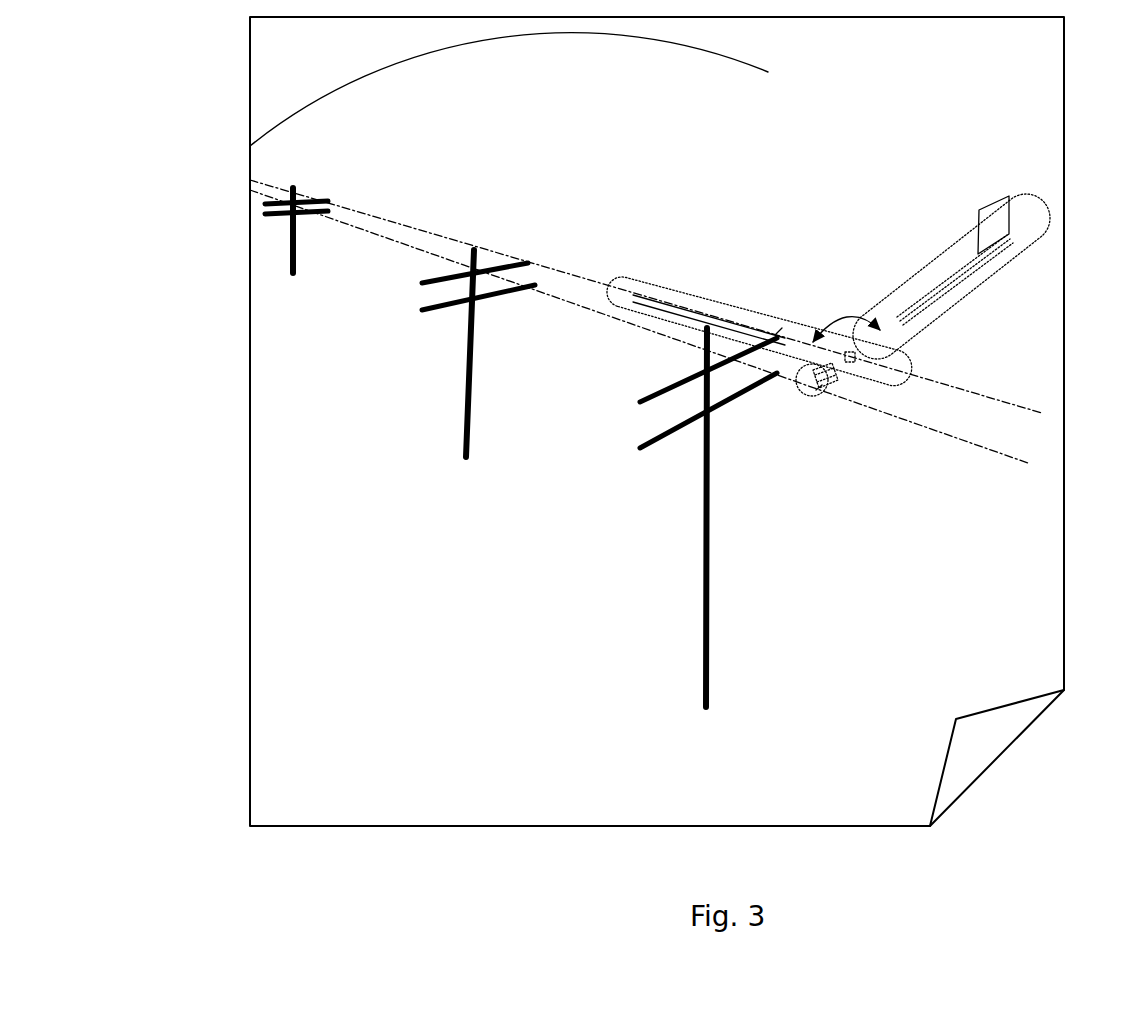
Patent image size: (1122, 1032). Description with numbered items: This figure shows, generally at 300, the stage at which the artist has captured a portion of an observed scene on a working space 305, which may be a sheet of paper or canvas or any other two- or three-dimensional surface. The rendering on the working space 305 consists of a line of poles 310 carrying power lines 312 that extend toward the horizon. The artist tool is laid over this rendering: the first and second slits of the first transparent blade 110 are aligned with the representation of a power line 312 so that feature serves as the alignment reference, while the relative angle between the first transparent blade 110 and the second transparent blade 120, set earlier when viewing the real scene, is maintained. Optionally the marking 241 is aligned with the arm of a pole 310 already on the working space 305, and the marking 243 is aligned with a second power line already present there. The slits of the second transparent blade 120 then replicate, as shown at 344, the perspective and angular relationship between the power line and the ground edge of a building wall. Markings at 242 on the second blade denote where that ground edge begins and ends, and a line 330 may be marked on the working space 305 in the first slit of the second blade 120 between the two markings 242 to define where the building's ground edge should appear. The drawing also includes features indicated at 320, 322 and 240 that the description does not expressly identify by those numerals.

The captured portion of scene 300 is at (150, 320).
The working space 305 is at (1066, 120).
The poles 310 is at (712, 600).
The power lines 312 is at (399, 211).
The first slot 320 is at (606, 278).
The first transparent blade 110 is at (680, 284).
The second slot 322 is at (920, 386).
The second transparent blade 120 is at (937, 318).
The pivot 240 is at (843, 316).
The marking 241 is at (783, 320).
The markings 242 is at (1015, 260).
The marking 243 is at (822, 396).
The line on working space 330 is at (980, 195).
The replicated relationship 344 is at (1021, 224).